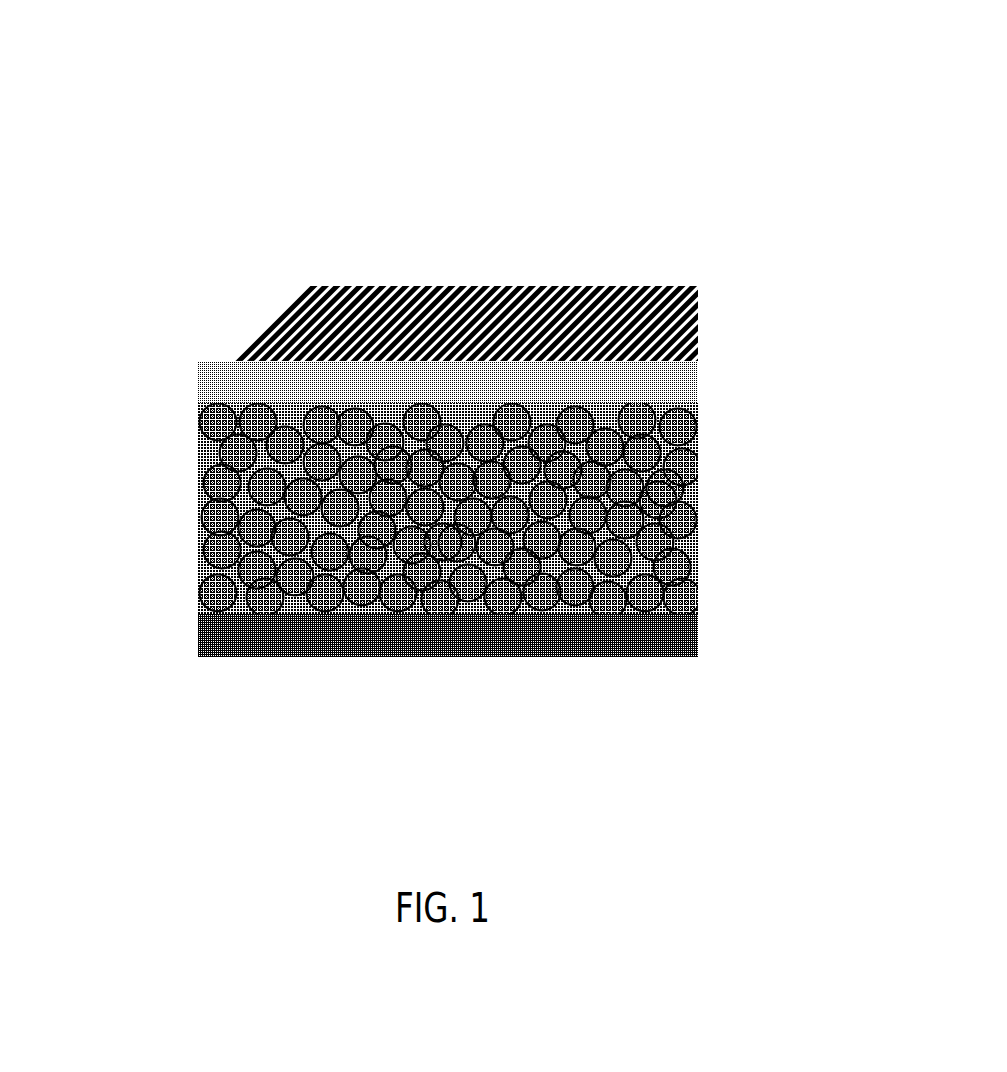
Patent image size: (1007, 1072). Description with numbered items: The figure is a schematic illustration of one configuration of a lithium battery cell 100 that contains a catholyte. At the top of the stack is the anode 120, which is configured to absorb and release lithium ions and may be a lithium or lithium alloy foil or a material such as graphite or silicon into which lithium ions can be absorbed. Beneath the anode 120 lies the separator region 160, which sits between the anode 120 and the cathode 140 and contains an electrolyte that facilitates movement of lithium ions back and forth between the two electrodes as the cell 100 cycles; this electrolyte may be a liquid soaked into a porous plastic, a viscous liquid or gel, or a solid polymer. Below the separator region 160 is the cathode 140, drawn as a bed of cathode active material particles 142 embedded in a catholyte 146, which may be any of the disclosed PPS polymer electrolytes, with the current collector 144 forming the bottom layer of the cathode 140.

The lithium battery cell 100 is at (262, 176).
The anode 120 is at (240, 312).
The separator region 160 is at (673, 388).
The cathode 140 is at (188, 407).
The cathode active material particles 142 is at (500, 508).
The current collector 144 is at (235, 640).
The catholyte 146 is at (688, 488).